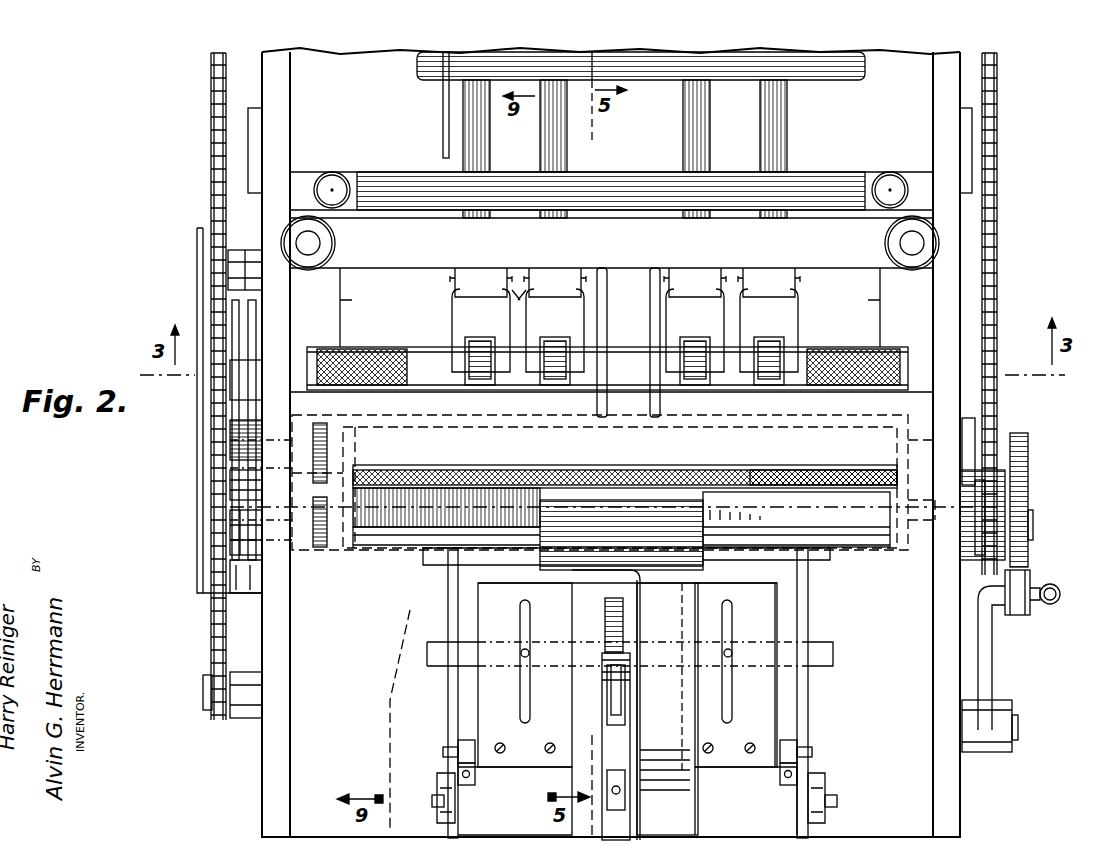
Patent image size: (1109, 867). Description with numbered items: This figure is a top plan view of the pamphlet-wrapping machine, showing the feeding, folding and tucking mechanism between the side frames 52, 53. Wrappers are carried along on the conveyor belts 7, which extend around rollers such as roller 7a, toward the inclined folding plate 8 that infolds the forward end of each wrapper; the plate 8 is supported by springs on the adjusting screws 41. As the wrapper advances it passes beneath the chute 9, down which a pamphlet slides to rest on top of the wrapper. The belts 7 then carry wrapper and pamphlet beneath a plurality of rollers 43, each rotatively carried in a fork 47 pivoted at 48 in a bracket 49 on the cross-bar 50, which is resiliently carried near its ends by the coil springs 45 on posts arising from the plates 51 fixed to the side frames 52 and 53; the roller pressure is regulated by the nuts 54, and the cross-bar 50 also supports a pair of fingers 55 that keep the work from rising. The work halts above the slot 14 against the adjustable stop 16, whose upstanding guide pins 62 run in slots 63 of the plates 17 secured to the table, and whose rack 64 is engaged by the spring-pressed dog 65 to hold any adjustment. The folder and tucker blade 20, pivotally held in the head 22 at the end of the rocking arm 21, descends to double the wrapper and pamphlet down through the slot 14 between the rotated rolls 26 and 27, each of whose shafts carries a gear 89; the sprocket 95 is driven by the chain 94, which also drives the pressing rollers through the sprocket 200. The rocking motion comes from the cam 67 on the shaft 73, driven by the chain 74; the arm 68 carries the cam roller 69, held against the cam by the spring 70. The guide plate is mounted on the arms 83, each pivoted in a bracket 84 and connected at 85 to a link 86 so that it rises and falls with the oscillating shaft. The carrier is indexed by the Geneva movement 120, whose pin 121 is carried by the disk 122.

The conveyor belts 7 is at (480, 150).
The roller 7a is at (433, 388).
The folding plate 8 is at (618, 190).
The chute 9 is at (652, 80).
The slot 14 is at (487, 470).
The stop 16 is at (815, 645).
The plates 17 is at (490, 620).
The blade 20 is at (592, 492).
The rocking arm 21 is at (667, 709).
The head 22 is at (650, 510).
The roll 26 is at (888, 505).
The roll 27 is at (806, 470).
The adjusting screws 41 is at (333, 182).
The rollers 43 is at (478, 348).
The coil springs 45 is at (312, 243).
The fork 47 is at (452, 316).
The pivot 48 is at (455, 282).
The bracket 49 is at (480, 275).
The cross-bar 50 is at (402, 278).
The plates 51 is at (340, 330).
The side frame 52 is at (940, 292).
The side frame 53 is at (292, 310).
The nuts 54 is at (328, 260).
The fingers 55 is at (652, 318).
The guide pins 62 is at (521, 654).
The slots 63 is at (520, 612).
The rack 64 is at (610, 612).
The spring-pressed dog 65 is at (615, 692).
The cam 67 is at (1038, 420).
The arm 68 is at (993, 660).
The cam roller 69 is at (1030, 578).
The spring 70 is at (1060, 596).
The shaft 73 is at (1034, 520).
The chain 74 is at (996, 308).
The arms 83 is at (449, 686).
The bracket 84 is at (445, 750).
The pivot 85 is at (432, 802).
The link 86 is at (440, 795).
The gear 89 is at (335, 452).
The chain 94 is at (221, 620).
The sprocket 95 is at (195, 520).
The Geneva movement 120 is at (245, 478).
The pin 121 is at (250, 438).
The disk 122 is at (250, 398).
The sprocket 200 is at (211, 650).